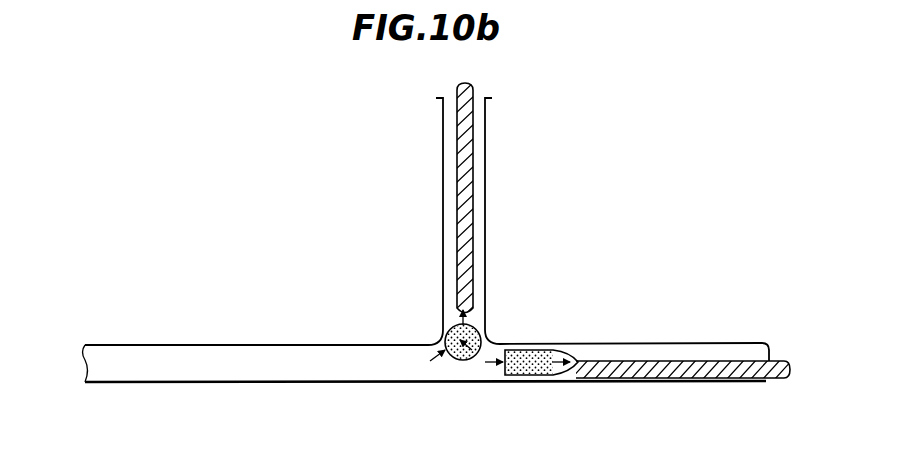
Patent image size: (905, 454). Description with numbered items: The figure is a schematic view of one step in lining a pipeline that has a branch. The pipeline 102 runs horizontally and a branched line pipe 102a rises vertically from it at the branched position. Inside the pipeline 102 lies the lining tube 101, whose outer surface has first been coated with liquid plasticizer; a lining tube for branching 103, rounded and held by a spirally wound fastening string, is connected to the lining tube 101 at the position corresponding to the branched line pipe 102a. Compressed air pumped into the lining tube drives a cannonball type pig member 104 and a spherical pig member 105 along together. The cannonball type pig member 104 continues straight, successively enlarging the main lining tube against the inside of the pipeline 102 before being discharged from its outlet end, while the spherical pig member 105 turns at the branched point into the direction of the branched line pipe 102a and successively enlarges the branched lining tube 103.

The lining tube 101 is at (280, 345).
The pipeline 102 is at (216, 345).
The branched line pipe 102a is at (485, 196).
The lining tube for branching 103 is at (468, 160).
The cannonball type pig member 104 is at (540, 362).
The spherical pig member 105 is at (472, 338).